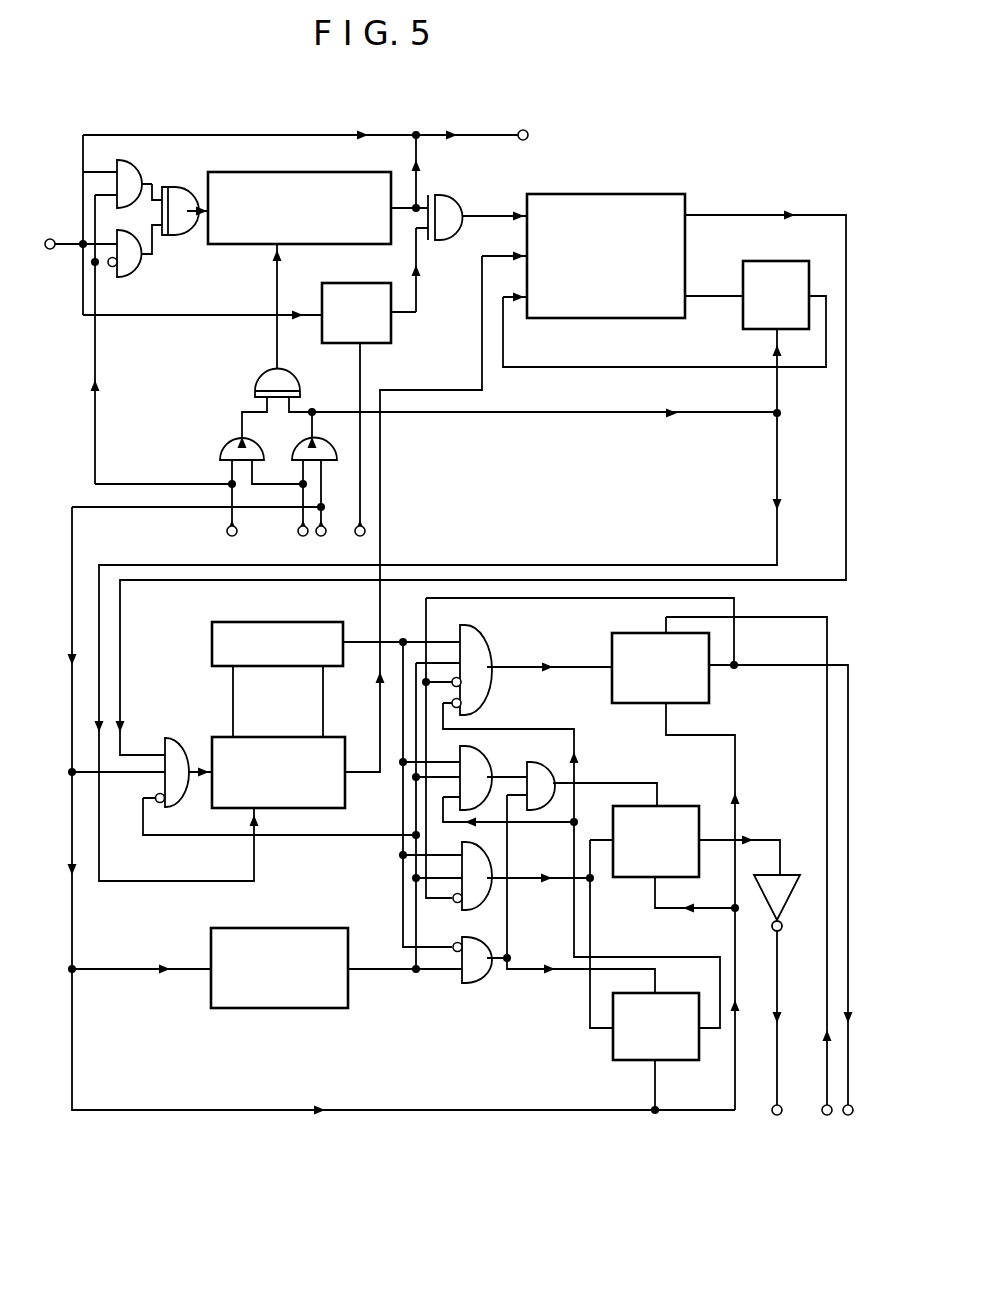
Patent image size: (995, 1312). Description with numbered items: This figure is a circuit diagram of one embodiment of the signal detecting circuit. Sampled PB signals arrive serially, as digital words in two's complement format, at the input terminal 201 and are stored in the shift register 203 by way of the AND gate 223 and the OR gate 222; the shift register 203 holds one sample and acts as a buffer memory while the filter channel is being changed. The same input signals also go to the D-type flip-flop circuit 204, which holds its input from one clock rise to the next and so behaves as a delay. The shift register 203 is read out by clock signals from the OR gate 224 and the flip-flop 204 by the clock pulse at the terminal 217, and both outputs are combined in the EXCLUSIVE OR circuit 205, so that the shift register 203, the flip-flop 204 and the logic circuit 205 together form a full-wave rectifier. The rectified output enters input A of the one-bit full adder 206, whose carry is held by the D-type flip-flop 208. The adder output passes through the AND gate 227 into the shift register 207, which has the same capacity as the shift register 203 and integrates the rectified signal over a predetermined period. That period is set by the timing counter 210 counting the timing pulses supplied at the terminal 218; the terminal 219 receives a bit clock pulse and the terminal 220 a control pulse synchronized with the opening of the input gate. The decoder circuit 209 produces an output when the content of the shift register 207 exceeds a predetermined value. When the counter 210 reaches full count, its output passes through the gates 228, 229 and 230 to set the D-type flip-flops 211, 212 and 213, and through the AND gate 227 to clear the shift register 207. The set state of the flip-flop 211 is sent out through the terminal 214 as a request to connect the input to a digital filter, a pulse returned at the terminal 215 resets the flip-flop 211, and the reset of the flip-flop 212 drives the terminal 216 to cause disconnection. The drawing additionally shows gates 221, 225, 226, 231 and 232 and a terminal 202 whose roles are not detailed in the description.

The input terminal 201 is at (45, 243).
The output terminal 202 is at (530, 138).
The shift register 203 is at (338, 172).
The D-type flip-flop circuit 204 is at (374, 283).
The EXCLUSIVE OR circuit 205 is at (468, 186).
The one-bit full adder 206 is at (618, 193).
The shift register 207 is at (280, 737).
The D-type flip-flop 208 is at (781, 260).
The decoder circuit 209 is at (258, 622).
The timing counter 210 is at (333, 928).
The D-type flip-flop 211 is at (650, 633).
The D-type flip-flop 212 is at (682, 806).
The D-type flip-flop 213 is at (688, 987).
The terminal 214 is at (853, 1111).
The terminal 215 is at (822, 1111).
The terminal 216 is at (772, 1111).
The terminal 217 is at (356, 535).
The terminal 218 is at (319, 536).
The terminal 219 is at (299, 535).
The terminal 220 is at (226, 531).
The AND gate 221 is at (144, 176).
The OR gate 222 is at (178, 187).
The AND gate 223 is at (140, 266).
The OR gate 224 is at (262, 369).
The AND gate 225 is at (223, 441).
The AND gate 226 is at (332, 438).
The AND gate 227 is at (184, 740).
The gate 228 is at (488, 661).
The gate 229 is at (486, 771).
The gate 230 is at (490, 870).
The AND gate 231 is at (490, 948).
The AND gate 232 is at (556, 781).